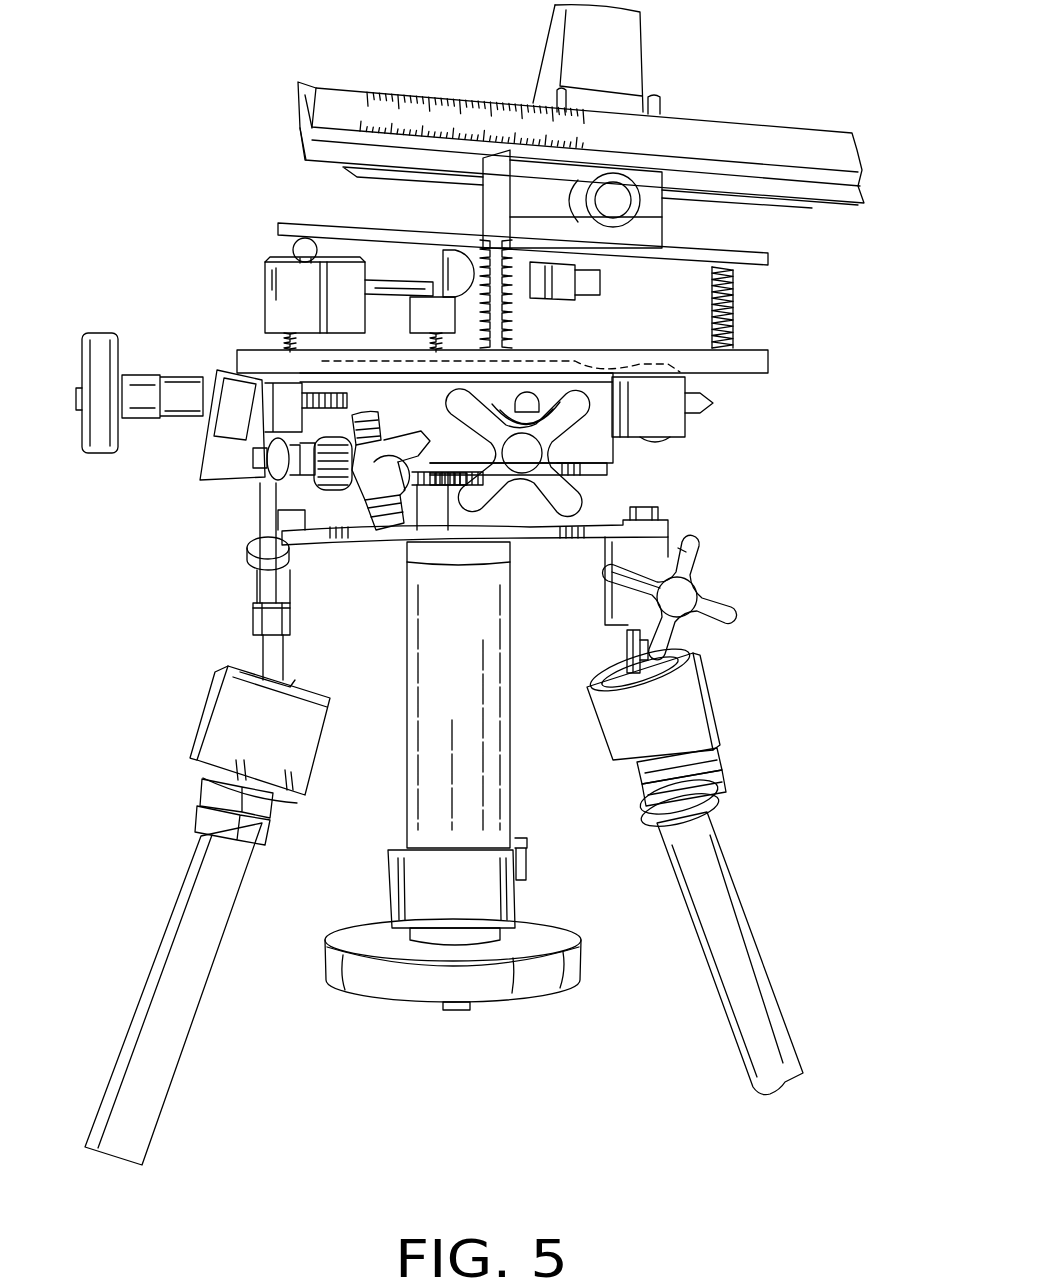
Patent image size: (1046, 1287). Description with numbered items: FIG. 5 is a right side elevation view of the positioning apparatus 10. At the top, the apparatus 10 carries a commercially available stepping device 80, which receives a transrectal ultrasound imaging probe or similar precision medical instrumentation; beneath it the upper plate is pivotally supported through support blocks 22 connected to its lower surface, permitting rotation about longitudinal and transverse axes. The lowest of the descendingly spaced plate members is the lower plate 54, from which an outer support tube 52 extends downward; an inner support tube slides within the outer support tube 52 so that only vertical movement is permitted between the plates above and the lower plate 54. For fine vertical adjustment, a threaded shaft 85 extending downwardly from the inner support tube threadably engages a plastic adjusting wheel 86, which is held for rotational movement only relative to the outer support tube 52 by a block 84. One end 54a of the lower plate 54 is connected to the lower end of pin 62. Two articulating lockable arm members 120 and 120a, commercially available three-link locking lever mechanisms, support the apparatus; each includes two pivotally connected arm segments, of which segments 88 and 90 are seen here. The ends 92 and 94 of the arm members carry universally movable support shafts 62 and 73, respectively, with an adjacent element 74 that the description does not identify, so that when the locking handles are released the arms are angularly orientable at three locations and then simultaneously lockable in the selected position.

The apparatus 10 is at (807, 357).
The support blocks 22 is at (603, 572).
The outer support tube 52 is at (510, 757).
The lower plate 54 is at (563, 527).
The end of lower plate 54a is at (250, 540).
The pin 62 is at (253, 615).
The universally movable support shaft 73 is at (620, 643).
The star knob 74 is at (720, 600).
The stepping device 80 is at (723, 95).
The block 84 is at (486, 891).
The threaded shaft 85 is at (445, 1012).
The plastic adjusting wheel 86 is at (546, 1000).
The arm segment 88 is at (160, 942).
The arm segment 90 is at (743, 890).
The end of articulating arm member 92 is at (205, 712).
The end of articulating arm member 94 is at (715, 710).
The articulating lockable arm member 120 is at (180, 1058).
The articulating lockable arm member 120a is at (780, 993).